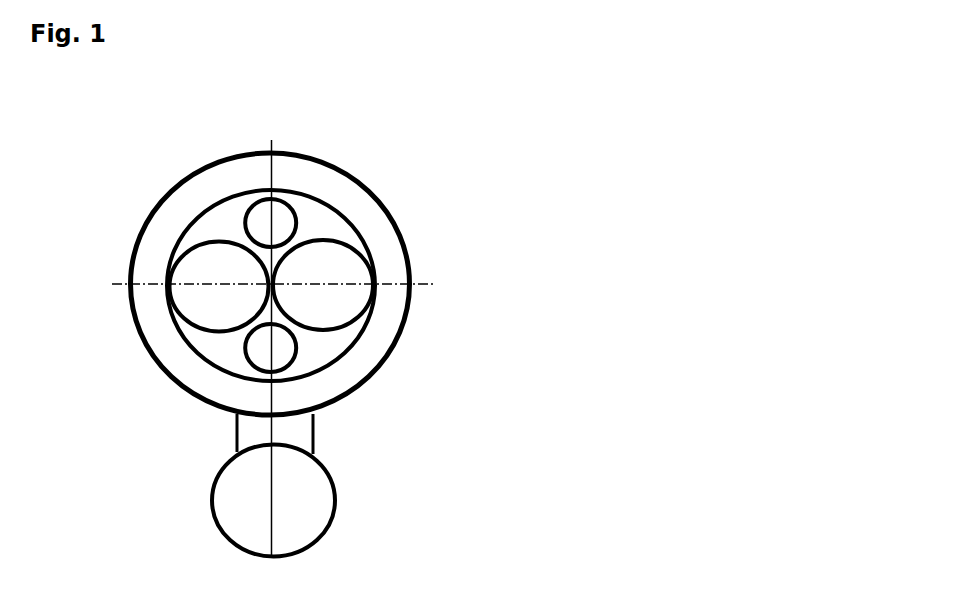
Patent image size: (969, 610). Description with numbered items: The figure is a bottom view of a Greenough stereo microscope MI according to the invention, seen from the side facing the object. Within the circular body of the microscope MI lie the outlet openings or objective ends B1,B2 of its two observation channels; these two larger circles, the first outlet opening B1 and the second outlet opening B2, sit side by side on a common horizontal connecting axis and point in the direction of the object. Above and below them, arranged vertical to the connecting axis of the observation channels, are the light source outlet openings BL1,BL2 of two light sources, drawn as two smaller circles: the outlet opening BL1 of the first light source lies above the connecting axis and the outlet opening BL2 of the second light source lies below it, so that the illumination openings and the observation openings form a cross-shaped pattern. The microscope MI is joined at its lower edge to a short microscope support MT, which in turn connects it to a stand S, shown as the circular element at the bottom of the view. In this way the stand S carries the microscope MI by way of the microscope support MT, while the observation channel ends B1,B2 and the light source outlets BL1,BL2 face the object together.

The outlet openings of the observation channels B1,B2 is at (395, 220).
The outlet opening of the first observation channel B1 is at (219, 287).
The outlet opening of the second observation channel B2 is at (323, 285).
The outlet openings of the light sources BL1,BL2 is at (451, 273).
The outlet opening of the first light source BL1 is at (270, 223).
The outlet opening of the second light source BL2 is at (268, 352).
The microscope MI is at (383, 368).
The microscope support MT is at (287, 428).
The stand S is at (288, 502).